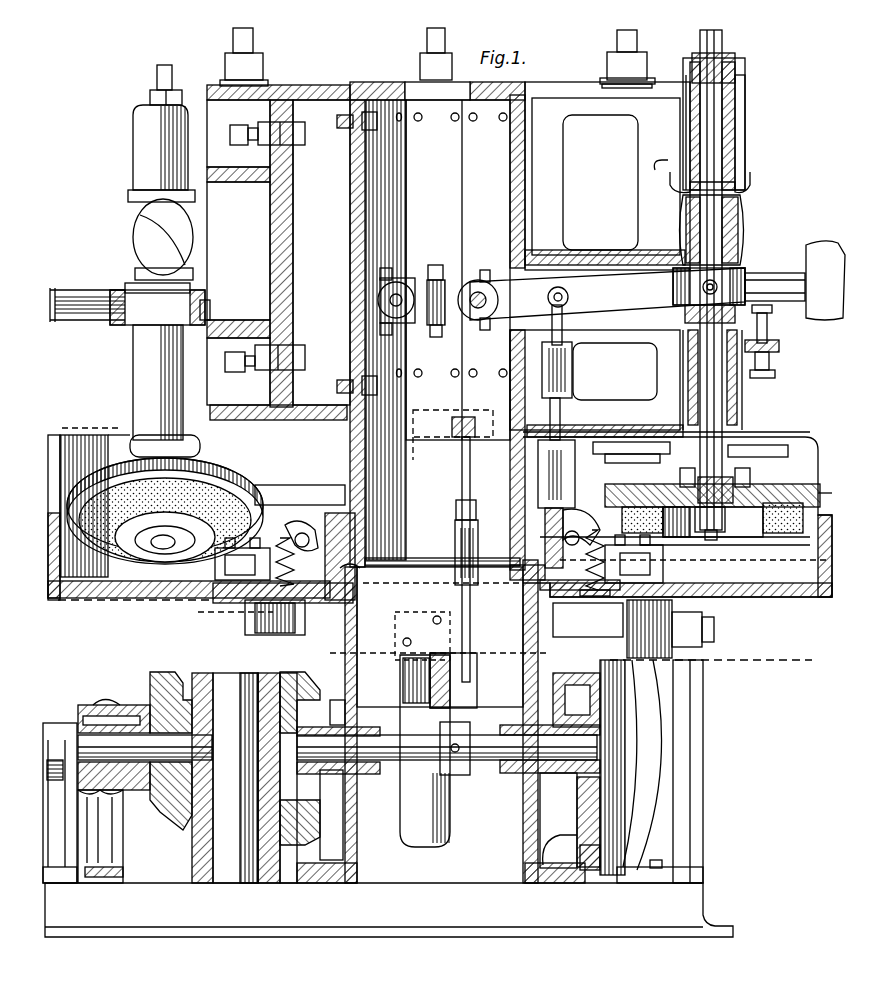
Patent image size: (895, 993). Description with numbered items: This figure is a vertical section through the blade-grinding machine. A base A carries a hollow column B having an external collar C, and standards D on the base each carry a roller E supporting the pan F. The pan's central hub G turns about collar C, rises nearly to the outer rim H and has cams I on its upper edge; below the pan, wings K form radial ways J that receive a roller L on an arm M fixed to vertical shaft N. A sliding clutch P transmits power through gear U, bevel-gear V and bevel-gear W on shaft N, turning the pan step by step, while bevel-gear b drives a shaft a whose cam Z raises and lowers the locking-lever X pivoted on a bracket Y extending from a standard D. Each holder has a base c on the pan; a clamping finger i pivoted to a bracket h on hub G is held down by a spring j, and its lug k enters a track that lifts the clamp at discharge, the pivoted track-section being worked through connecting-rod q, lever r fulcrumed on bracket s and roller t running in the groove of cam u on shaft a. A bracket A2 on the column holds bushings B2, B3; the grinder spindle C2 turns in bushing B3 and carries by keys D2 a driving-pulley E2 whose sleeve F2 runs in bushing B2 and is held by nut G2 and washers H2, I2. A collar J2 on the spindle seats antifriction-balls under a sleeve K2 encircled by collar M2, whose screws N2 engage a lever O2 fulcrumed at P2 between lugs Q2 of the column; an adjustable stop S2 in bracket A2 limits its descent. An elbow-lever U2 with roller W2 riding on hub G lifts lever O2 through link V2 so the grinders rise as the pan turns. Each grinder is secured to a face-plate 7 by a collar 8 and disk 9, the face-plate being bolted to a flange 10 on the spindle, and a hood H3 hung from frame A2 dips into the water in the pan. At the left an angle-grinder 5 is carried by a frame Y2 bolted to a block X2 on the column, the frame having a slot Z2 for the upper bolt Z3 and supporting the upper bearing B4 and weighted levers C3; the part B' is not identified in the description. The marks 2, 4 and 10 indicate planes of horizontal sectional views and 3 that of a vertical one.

The spindle head B4 is at (195, 148).
The bolt Z3 is at (300, 138).
The housing chamber Z2 is at (268, 186).
The housing wall Y2 is at (265, 220).
The housing bottom X2 is at (293, 254).
The bearing collar M2 is at (148, 298).
The retaining piece N2 is at (206, 305).
The feed tube C3 is at (102, 312).
The bolt J2 is at (243, 360).
The spindle B3 is at (197, 380).
The plate I is at (376, 487).
The shaft B is at (442, 333).
The block P is at (453, 437).
The rod q is at (463, 480).
The column casing C is at (420, 612).
The lug h is at (358, 578).
The dashed part t is at (413, 612).
The lever O2 is at (607, 294).
The pivot P2 is at (478, 280).
The bearing Q2 is at (392, 287).
The frame block A2 is at (557, 223).
The link V2 is at (566, 402).
The slide U2 is at (550, 477).
The hatched piece W2 is at (543, 513).
The cam G is at (543, 527).
The pawl i is at (424, 517).
The spring j is at (600, 560).
The block c is at (683, 577).
The block J is at (560, 623).
The shelf K is at (548, 617).
The vertical shaft B2 is at (735, 123).
The sleeve F2 is at (742, 100).
The nut G2 is at (728, 62).
The stem H2 is at (650, 77).
The washer I2 is at (657, 82).
The flange E2 is at (743, 193).
The sleeve block D2 is at (743, 200).
The handle K2 is at (795, 280).
The screw S2 is at (780, 333).
The flange plate C2 is at (747, 413).
The housing H is at (677, 531).
The housing floor F is at (775, 593).
The plate 4 is at (800, 482).
The nut 10 is at (838, 574).
The grinding wheel 8 is at (829, 499).
The hub 9 is at (713, 523).
The line 3 is at (784, 532).
The wall 7 is at (819, 493).
The housing H3 is at (85, 435).
The section line 2 is at (434, 631).
The wheel 5 is at (258, 492).
The plate k is at (283, 524).
The base A is at (389, 910).
The bracket U is at (150, 704).
The collar V is at (190, 704).
The bracket M is at (275, 654).
The block L is at (247, 627).
The shaft hub N is at (252, 745).
The bevel gear W is at (187, 827).
The bevel gear b is at (303, 813).
The pulley u is at (450, 770).
The sleeve s is at (420, 720).
The crank r is at (456, 688).
The collar a is at (492, 752).
The nut Y is at (640, 665).
The gear E is at (627, 667).
The collar X is at (623, 673).
The bracket B' is at (555, 828).
The pinion shaft Z is at (595, 870).
The standard D is at (683, 758).